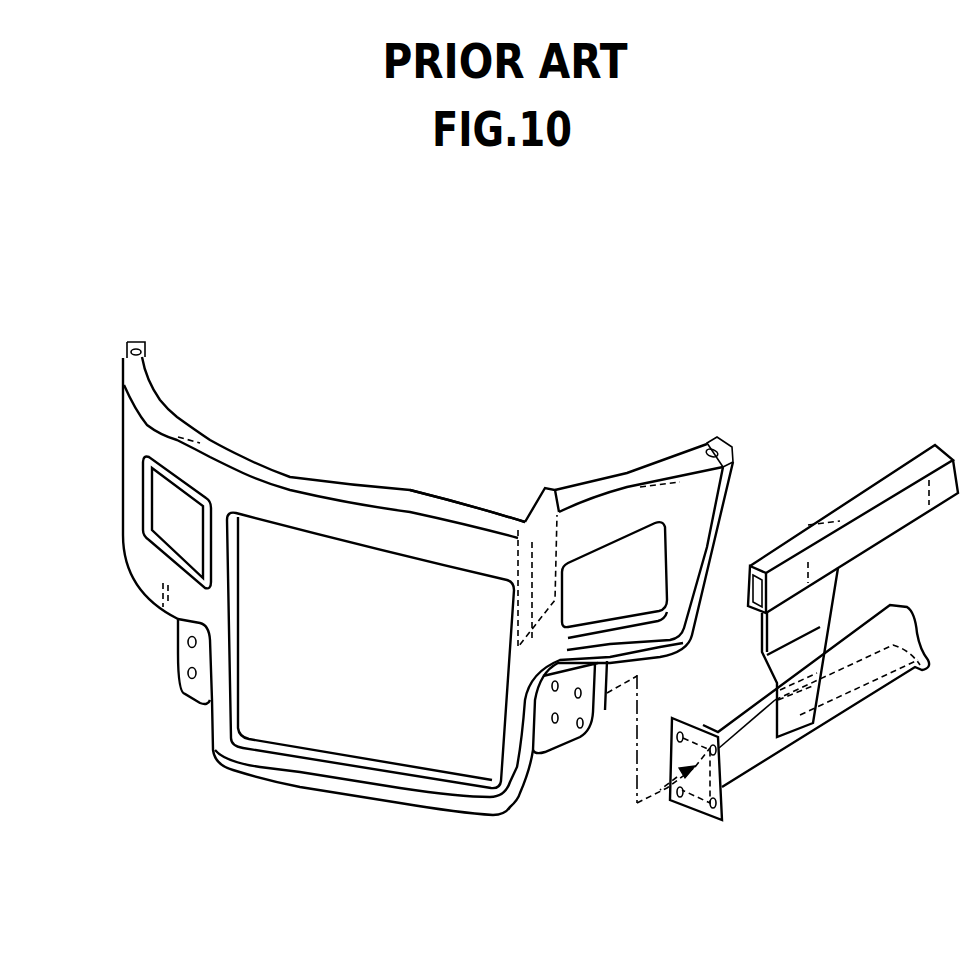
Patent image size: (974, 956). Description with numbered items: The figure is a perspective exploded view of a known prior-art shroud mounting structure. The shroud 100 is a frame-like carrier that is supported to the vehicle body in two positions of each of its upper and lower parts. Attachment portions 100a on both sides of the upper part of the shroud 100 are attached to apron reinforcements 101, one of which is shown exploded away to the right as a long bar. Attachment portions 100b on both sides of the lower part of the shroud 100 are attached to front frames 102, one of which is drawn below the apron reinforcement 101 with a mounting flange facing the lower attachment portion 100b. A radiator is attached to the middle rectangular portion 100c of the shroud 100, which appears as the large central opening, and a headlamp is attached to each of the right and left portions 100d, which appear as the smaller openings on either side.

The shroud 100 is at (272, 467).
The attachment portions 100a is at (135, 342).
The attachment portions 100b is at (197, 701).
The middle rectangular portion 100c is at (357, 518).
The right and left portions 100d is at (145, 433).
The apron reinforcements 101 is at (910, 462).
The front frames 102 is at (853, 687).